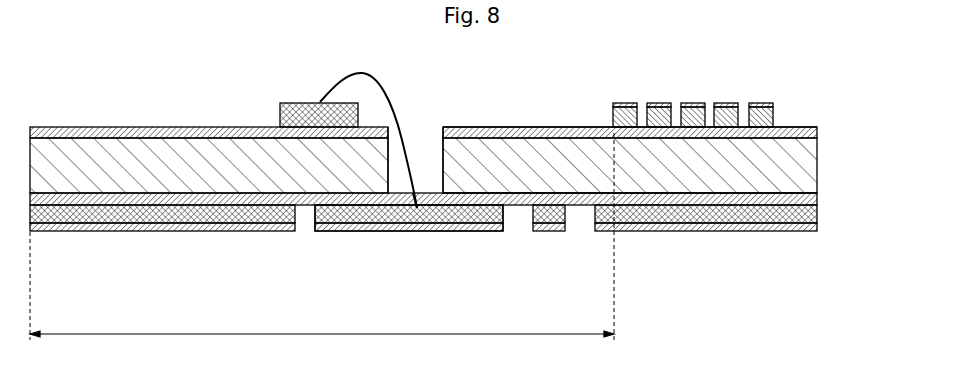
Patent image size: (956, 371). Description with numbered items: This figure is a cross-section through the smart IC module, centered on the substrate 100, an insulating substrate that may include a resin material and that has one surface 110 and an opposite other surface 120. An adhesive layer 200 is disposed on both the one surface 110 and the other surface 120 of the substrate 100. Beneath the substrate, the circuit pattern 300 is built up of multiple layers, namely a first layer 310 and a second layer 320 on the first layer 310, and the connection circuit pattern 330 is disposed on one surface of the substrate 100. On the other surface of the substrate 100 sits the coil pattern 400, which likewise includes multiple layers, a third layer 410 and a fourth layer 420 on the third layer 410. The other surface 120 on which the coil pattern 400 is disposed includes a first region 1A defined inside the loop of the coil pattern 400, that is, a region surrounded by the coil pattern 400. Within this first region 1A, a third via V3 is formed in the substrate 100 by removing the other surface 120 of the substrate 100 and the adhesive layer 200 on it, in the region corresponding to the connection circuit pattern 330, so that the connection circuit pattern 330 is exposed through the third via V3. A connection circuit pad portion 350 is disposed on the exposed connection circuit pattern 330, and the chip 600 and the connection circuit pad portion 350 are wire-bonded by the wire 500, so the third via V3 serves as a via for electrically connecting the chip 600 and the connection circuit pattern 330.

The substrate 100 is at (818, 166).
The one surface 110 is at (705, 198).
The other surface 120 is at (554, 135).
The adhesive layer 200 is at (818, 131).
The circuit pattern 300 is at (473, 245).
The first layer 310 is at (818, 213).
The second layer 320 is at (818, 229).
The connection circuit pattern 330 is at (451, 288).
The connection circuit pad portion 350 is at (417, 233).
The coil pattern 400 is at (743, 99).
The third layer 410 is at (775, 118).
The fourth layer 420 is at (773, 104).
The wire 500 is at (362, 73).
The chip 600 is at (278, 112).
The third via V3 is at (421, 143).
The first region 1A is at (322, 244).